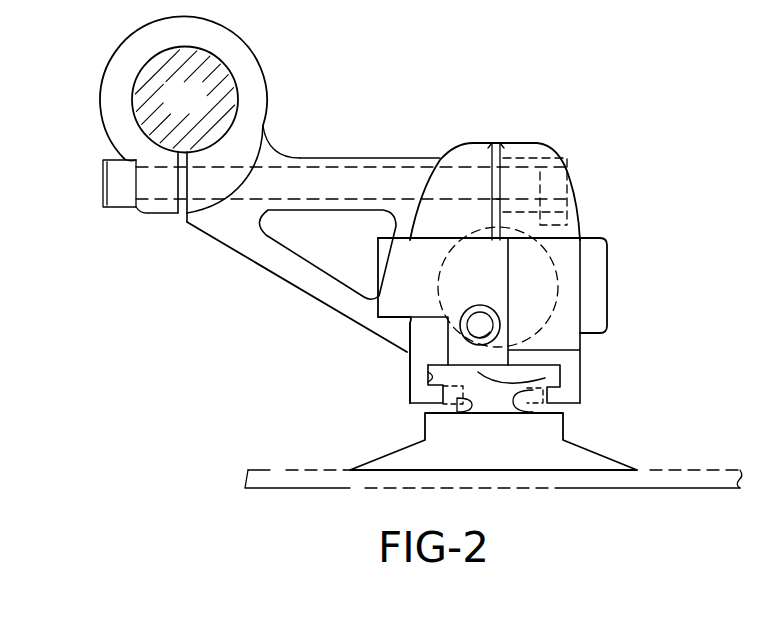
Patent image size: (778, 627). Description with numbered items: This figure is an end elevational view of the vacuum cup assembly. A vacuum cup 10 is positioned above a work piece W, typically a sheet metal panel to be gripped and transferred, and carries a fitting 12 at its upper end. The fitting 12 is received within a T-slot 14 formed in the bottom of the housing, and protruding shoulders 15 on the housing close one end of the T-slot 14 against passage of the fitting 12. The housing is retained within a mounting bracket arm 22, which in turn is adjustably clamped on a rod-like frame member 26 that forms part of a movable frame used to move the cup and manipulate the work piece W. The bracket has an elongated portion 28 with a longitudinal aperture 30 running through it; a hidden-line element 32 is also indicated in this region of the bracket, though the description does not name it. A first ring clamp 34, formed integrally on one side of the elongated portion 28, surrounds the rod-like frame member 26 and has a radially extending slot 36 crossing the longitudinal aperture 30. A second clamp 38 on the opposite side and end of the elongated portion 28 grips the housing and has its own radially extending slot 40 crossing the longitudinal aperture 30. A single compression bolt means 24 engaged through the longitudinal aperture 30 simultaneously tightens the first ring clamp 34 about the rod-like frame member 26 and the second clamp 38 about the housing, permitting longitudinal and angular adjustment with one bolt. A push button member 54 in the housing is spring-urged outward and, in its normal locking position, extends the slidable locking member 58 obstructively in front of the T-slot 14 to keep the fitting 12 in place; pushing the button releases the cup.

The vacuum cup 10 is at (612, 460).
The fitting 12 is at (560, 382).
The T-slot 14 is at (428, 382).
The protruding shoulders 15 is at (420, 413).
The mounting bracket arm 22 is at (296, 125).
The single compression bolt means 24 is at (107, 205).
The rod-like frame member 26 is at (201, 111).
The elongated portion 28 is at (405, 158).
The longitudinal aperture 30 is at (333, 172).
The hidden channel 32 is at (520, 166).
The first ring clamp 34 is at (110, 63).
The radially extending slot 36 is at (182, 218).
The second clamp 38 is at (577, 207).
The radially extending slot 40 is at (496, 146).
The push button member 54 is at (481, 318).
The slidable locking member 58 is at (550, 374).
The work piece W is at (265, 470).